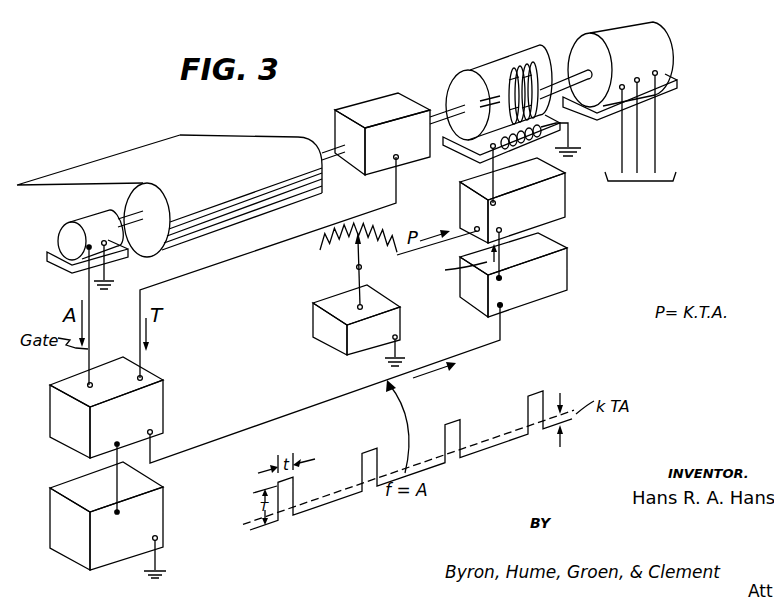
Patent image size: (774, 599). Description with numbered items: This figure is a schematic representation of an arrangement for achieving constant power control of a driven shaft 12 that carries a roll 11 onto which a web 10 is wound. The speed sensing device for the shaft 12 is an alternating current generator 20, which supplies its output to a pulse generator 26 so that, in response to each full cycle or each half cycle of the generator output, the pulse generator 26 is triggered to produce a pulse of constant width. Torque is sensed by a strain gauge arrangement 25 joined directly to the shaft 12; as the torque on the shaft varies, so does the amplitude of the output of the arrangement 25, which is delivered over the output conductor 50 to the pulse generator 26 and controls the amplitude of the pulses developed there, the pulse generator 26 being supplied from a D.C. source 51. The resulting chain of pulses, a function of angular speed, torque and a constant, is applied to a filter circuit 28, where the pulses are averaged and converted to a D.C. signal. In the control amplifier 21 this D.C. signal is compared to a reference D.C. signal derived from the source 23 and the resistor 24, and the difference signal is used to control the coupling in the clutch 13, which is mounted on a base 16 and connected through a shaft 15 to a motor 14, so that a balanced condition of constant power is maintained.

The strip web 10 is at (68, 175).
The roller 11 is at (233, 148).
The shaft 12 is at (338, 149).
The clutch 13 is at (500, 53).
The motor 14 is at (655, 50).
The shaft 15 is at (565, 70).
The base 16 is at (478, 162).
The generator 20 is at (73, 222).
The control amplifier 21 is at (463, 202).
The source 23 is at (320, 319).
The resistor 24 is at (320, 251).
The strain gauge arrangement 25 is at (380, 110).
The pulse generator 26 is at (70, 388).
The filter circuit 28 is at (462, 299).
The output conductor 50 is at (309, 236).
The D.C. source 51 is at (65, 543).